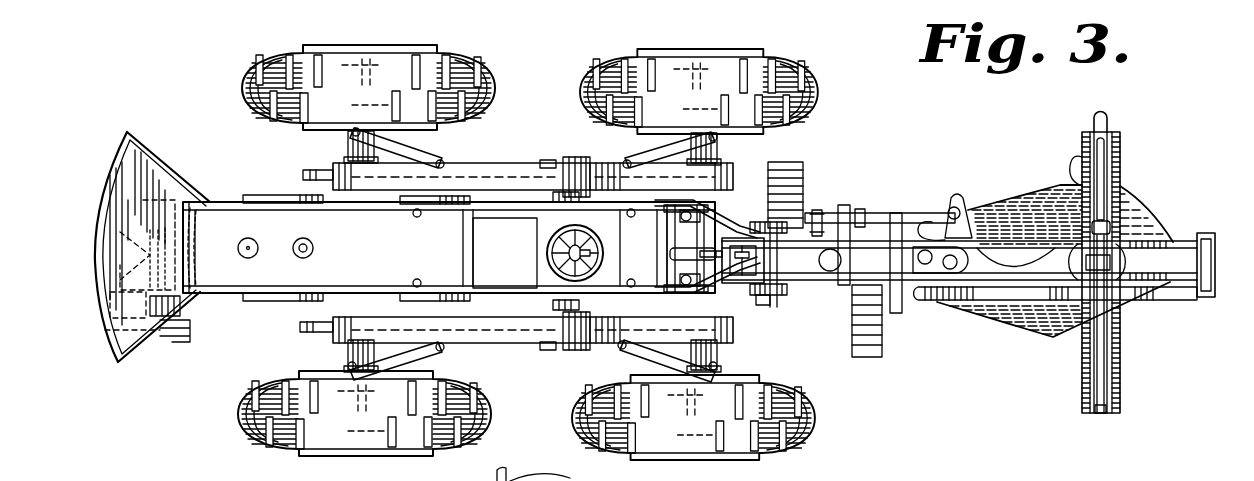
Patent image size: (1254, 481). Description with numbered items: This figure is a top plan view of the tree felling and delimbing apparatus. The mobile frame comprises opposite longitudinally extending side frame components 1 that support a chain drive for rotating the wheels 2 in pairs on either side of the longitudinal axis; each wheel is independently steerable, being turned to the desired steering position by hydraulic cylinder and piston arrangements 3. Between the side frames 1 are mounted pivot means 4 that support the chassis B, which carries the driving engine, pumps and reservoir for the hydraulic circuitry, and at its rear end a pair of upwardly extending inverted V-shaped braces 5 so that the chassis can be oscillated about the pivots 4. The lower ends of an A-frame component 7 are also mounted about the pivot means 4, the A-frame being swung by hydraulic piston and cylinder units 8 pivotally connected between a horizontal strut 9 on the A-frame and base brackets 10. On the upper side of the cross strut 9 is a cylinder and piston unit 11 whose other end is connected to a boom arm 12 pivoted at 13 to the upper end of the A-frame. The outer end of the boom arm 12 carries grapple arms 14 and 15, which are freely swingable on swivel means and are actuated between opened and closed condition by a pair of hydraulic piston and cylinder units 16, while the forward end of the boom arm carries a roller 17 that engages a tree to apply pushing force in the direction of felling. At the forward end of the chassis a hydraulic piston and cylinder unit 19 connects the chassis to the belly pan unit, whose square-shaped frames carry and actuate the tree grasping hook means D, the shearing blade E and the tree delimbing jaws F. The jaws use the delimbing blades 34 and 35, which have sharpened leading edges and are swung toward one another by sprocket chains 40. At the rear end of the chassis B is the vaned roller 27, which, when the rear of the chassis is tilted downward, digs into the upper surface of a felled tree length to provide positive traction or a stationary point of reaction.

The side frame components 1 is at (512, 165).
The wheels 2 is at (256, 62).
The hydraulic cylinder and piston arrangements 3 is at (418, 150).
The pivot means 4 is at (580, 158).
The inverted V-shaped braces 5 is at (318, 203).
The A-frame component 7 is at (728, 210).
The hydraulic piston and cylinder units 8 is at (680, 216).
The horizontal strut 9 is at (700, 240).
The base brackets 10 is at (548, 250).
The cylinder and piston unit 11 is at (676, 254).
The boom arm 12 is at (913, 278).
The pivot 13 is at (776, 296).
The grapple arm 14 is at (1100, 413).
The grapple arm 15 is at (1112, 130).
The hydraulic piston and cylinder units 16 is at (1100, 172).
The roller 17 is at (1216, 300).
The hydraulic piston and cylinder unit 19 is at (742, 283).
The roller 27 is at (100, 268).
The delimbing blade 34 is at (866, 340).
The delimbing blade 35 is at (790, 186).
The sprocket chain 40 is at (822, 214).
The chassis B is at (263, 195).
The hook means D is at (1158, 213).
The shearing blade E is at (1032, 318).
The tree delimbing jaws F is at (892, 366).